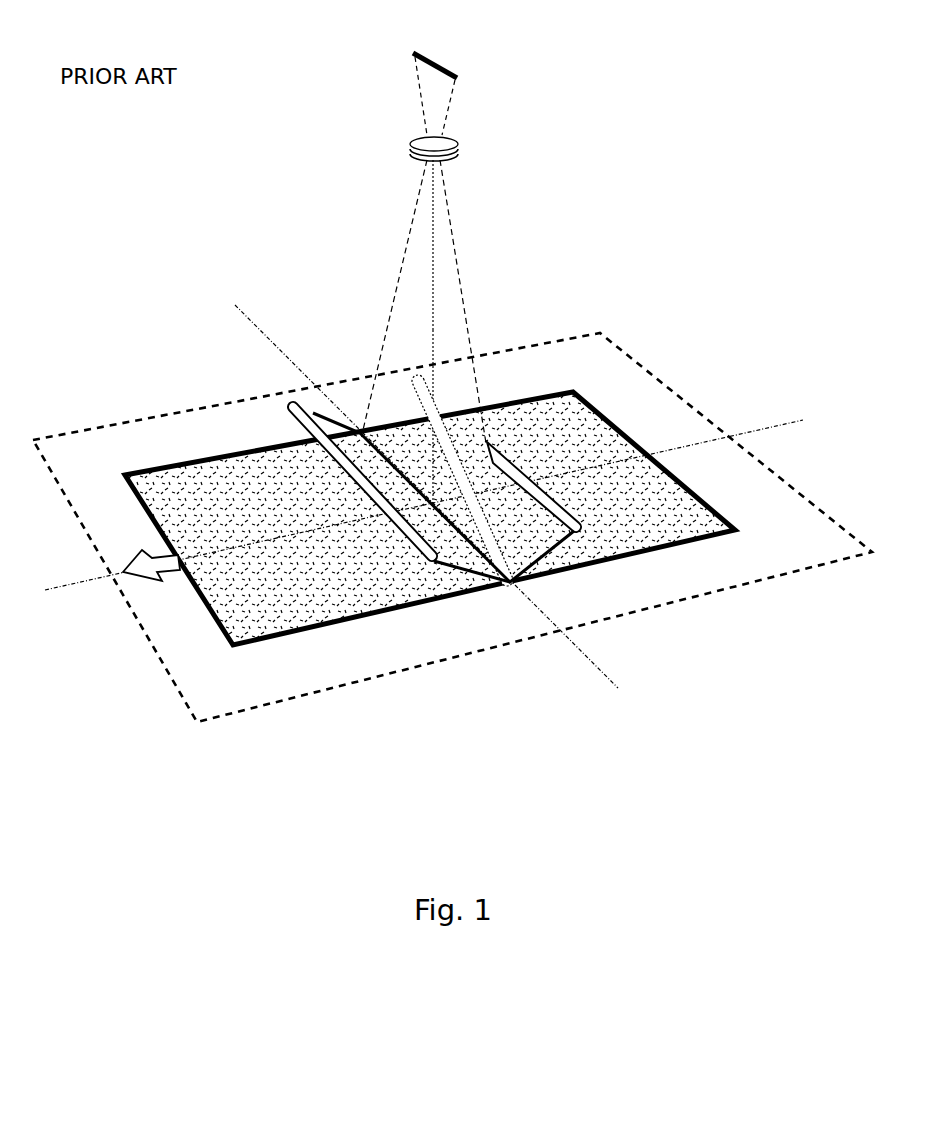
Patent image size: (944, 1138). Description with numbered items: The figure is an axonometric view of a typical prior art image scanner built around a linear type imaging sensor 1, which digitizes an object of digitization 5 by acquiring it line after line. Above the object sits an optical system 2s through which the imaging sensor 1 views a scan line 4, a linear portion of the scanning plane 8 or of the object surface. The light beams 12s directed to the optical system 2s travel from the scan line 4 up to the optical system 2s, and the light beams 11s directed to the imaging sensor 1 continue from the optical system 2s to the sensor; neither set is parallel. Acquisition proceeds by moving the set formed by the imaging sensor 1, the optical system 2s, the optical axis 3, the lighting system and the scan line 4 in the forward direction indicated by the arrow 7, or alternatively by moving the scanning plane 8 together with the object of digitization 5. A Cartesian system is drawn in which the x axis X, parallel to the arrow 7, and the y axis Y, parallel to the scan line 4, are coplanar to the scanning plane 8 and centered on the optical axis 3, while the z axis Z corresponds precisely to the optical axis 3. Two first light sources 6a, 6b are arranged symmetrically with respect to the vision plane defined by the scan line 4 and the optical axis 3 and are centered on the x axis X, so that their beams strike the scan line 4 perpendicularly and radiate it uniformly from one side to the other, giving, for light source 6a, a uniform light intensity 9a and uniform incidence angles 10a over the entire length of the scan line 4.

The linear type imaging sensor 1 is at (433, 60).
The light beams directed to the imaging sensor 11s is at (423, 100).
The optical system 2s is at (458, 147).
The light beams directed to the optical system 12s is at (400, 297).
The optical axis 3 is at (433, 273).
The scan line 4 is at (350, 483).
The object of digitization 5 is at (573, 392).
The first light source 6a is at (437, 563).
The first light source 6b is at (580, 529).
The arrow 7 is at (138, 556).
The scanning plane 8 is at (815, 507).
The light intensity 9a is at (467, 560).
The incidence angles 10a is at (447, 562).
The x axis X is at (803, 420).
The y axis Y is at (235, 305).
The z axis Z is at (433, 280).